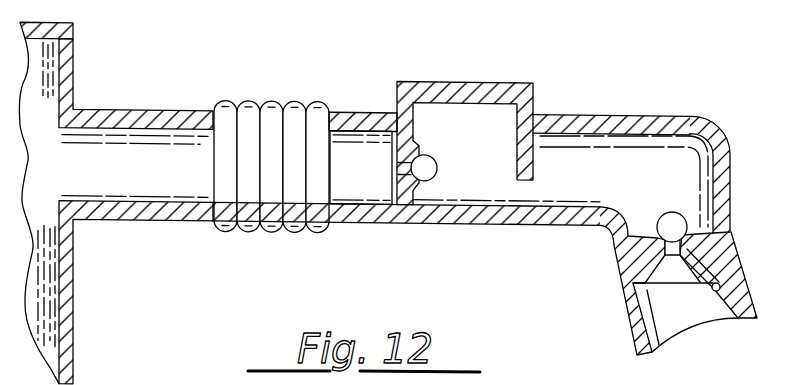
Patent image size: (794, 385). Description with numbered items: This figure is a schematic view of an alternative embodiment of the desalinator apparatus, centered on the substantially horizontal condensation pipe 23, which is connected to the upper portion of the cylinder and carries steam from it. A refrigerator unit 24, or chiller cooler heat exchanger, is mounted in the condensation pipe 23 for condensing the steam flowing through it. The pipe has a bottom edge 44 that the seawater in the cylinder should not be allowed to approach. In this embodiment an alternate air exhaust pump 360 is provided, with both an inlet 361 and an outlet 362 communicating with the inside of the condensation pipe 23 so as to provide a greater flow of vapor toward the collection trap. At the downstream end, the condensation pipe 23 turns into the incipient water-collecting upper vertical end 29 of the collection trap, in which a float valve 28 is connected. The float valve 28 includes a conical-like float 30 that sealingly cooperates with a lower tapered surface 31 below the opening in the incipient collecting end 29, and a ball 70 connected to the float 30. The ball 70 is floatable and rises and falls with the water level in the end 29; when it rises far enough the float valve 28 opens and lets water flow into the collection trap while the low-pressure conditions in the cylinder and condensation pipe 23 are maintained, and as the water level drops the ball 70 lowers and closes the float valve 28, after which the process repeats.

The condensation pipe 23 is at (372, 112).
The refrigerator unit 24 is at (247, 103).
The float valve 28 is at (613, 270).
The incipient water-collecting upper vertical end 29 is at (731, 148).
The conical-like float 30 is at (677, 287).
The lower tapered surface 31 is at (712, 283).
The bottom edge of the condensation pipe 44 is at (128, 219).
The ball 70 is at (666, 212).
The air exhaust pump 360 is at (452, 82).
The inlet 361 is at (402, 163).
The outlet 362 is at (528, 190).